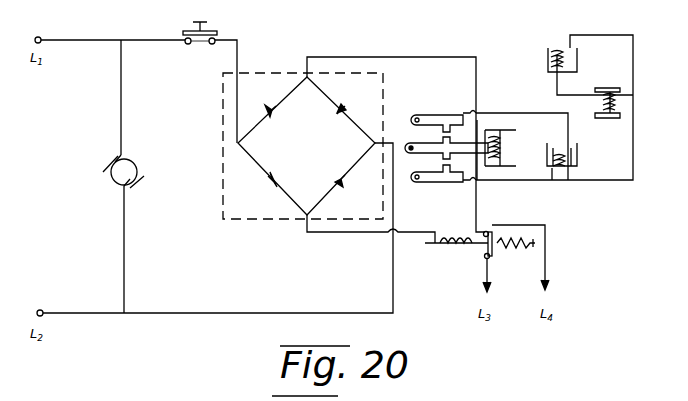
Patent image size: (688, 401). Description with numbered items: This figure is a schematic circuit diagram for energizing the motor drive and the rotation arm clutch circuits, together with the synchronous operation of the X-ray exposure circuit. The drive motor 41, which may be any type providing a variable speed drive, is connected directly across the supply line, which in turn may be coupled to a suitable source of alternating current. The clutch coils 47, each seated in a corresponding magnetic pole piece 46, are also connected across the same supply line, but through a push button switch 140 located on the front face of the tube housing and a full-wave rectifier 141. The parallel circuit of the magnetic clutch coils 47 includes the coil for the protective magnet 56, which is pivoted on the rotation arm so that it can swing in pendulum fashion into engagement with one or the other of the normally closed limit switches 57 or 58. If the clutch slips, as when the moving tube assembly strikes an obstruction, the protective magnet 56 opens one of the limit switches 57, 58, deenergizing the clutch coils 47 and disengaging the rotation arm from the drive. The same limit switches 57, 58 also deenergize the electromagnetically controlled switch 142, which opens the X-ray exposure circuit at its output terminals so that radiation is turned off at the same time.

The push button switch 140 is at (216, 31).
The drive motor 41 is at (137, 174).
The full-wave rectifier 141 is at (224, 205).
The protective limit switch 57 is at (446, 120).
The protective limit switch 58 is at (452, 184).
The protective magnet 56 is at (506, 148).
The clutch coil 47 is at (553, 48).
The magnetic pole piece 46 is at (580, 64).
The electromagnetically controlled switch 142 is at (482, 258).